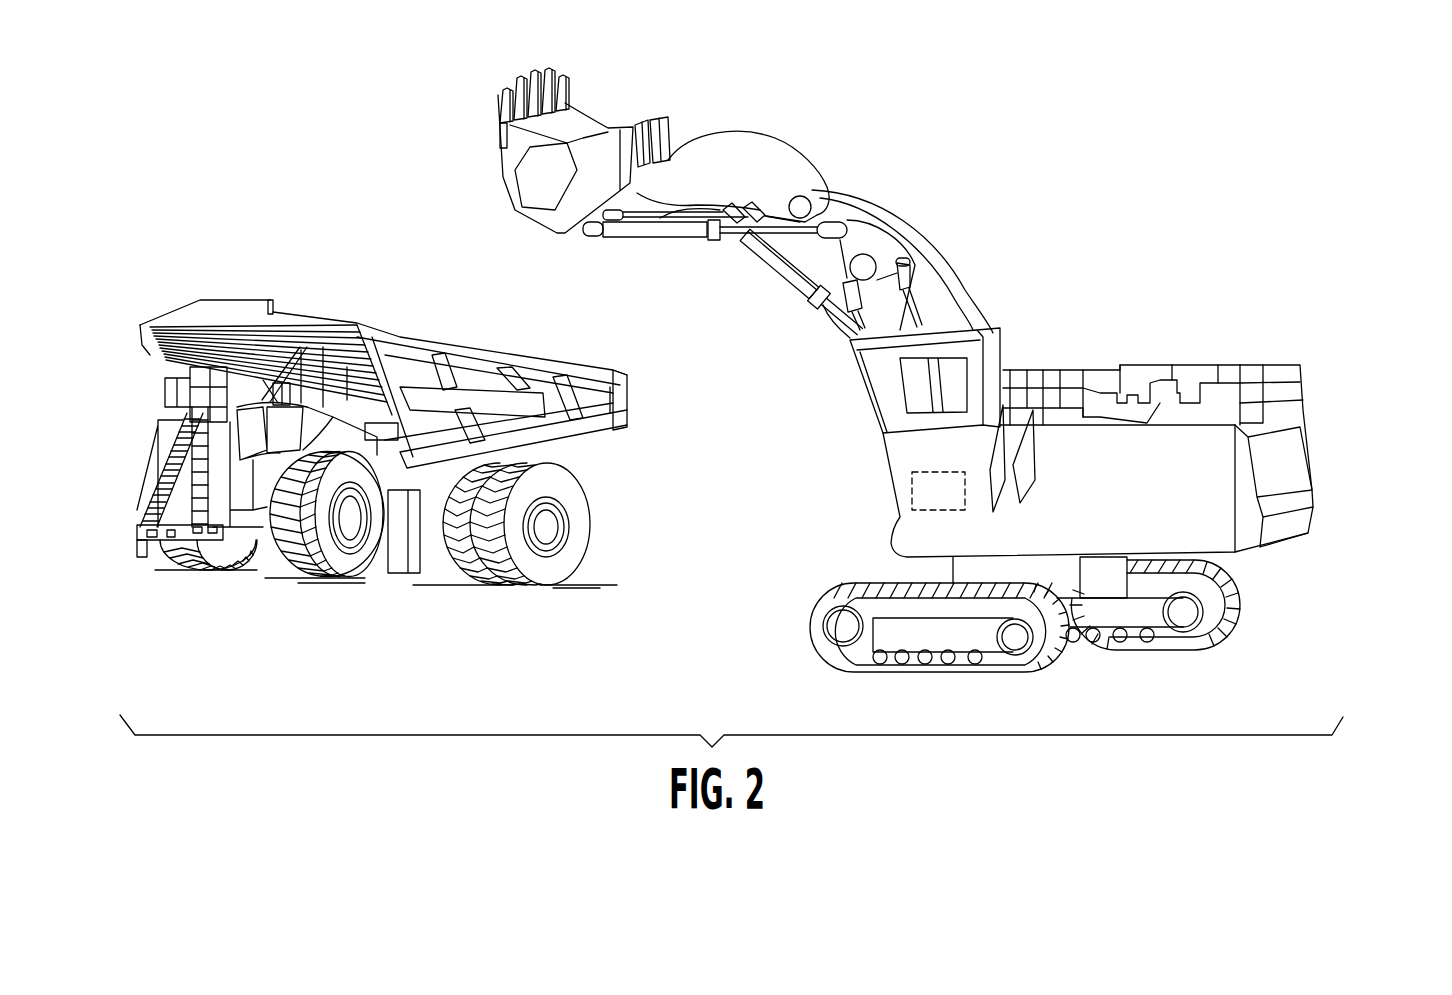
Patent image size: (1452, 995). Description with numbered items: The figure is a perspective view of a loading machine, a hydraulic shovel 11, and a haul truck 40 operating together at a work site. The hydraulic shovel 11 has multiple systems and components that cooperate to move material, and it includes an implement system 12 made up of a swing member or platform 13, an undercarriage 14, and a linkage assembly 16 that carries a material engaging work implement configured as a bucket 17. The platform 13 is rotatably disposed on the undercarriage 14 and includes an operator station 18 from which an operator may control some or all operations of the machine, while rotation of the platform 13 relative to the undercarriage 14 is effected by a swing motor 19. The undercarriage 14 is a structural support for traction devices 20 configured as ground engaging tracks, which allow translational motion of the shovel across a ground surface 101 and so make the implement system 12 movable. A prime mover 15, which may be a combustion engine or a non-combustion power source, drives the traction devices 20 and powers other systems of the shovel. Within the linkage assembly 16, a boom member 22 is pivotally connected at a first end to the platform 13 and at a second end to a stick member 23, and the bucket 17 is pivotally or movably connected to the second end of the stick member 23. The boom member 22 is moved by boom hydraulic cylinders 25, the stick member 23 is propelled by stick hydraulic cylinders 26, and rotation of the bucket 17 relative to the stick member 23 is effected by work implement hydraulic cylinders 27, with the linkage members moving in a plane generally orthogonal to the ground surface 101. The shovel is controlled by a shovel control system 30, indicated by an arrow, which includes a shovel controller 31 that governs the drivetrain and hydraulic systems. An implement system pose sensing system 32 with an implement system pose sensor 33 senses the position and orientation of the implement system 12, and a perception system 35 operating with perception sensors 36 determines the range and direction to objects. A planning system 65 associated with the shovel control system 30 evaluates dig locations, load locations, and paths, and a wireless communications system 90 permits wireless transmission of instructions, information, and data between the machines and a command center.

The hydraulic shovel 11 is at (1183, 162).
The implement system 12 is at (918, 92).
The platform 13 is at (1217, 533).
The undercarriage 14 is at (1077, 590).
The prime mover 15 is at (1330, 420).
The linkage assembly 16 is at (987, 145).
The bucket 17 is at (575, 126).
The operator station 18 is at (968, 355).
The swing motor 19 is at (873, 565).
The traction devices 20 is at (1003, 673).
The boom member 22 is at (925, 236).
The stick member 23 is at (735, 145).
The boom hydraulic cylinders 25 is at (853, 342).
The stick hydraulic cylinders 26 is at (810, 284).
The work implement hydraulic cylinders 27 is at (652, 222).
The shovel control system 30 is at (1135, 332).
The shovel controller 31 is at (923, 490).
The implement system pose sensing system 32 is at (848, 137).
The implement system pose sensor 33 is at (905, 172).
The perception system 35 is at (1243, 215).
The perception sensors 36 is at (1280, 237).
The haul truck 40 is at (298, 275).
The planning system 65 is at (1320, 247).
The wireless communications system 90 is at (1358, 258).
The ground surface 101 is at (597, 583).